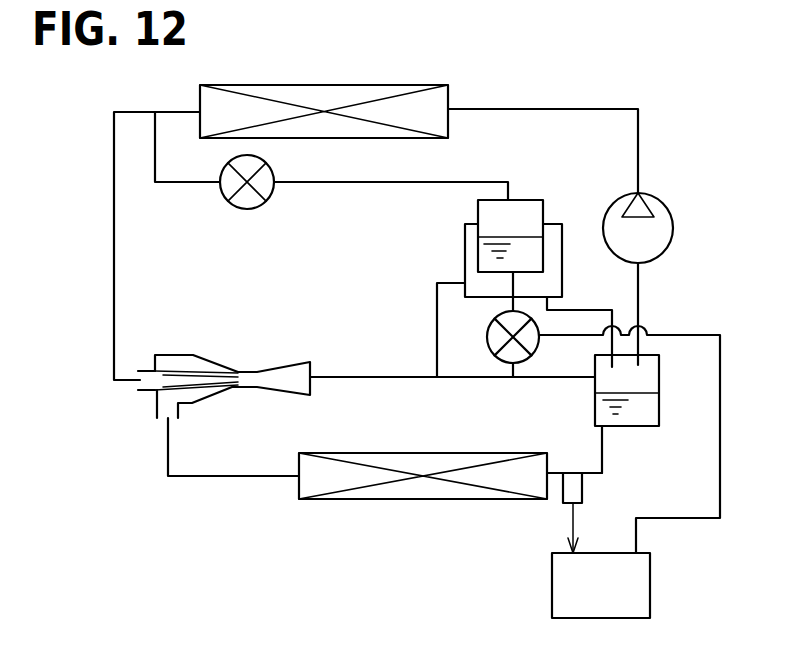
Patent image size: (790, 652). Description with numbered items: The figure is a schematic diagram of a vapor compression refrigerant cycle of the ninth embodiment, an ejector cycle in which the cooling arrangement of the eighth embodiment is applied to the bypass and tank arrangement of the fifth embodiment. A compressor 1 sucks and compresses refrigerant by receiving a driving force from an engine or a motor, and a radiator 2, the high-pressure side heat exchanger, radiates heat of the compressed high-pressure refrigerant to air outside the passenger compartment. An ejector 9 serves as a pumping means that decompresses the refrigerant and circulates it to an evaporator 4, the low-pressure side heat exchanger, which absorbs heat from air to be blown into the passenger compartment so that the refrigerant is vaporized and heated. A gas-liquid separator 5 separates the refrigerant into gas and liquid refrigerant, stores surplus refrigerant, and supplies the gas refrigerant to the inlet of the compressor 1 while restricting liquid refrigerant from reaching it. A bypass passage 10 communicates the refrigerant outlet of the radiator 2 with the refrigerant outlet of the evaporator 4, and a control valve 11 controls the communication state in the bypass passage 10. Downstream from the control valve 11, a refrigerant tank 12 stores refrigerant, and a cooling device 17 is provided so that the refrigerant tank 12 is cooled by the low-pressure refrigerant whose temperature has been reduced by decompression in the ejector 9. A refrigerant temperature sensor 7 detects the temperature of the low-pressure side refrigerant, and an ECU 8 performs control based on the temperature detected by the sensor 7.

The compressor 1 is at (673, 228).
The radiator 2 is at (388, 85).
The evaporator 4 is at (483, 453).
The gas-liquid separator 5 is at (659, 392).
The refrigerant temperature sensor 7 is at (585, 490).
The ECU 8 is at (552, 586).
The ejector 9 is at (257, 370).
The bypass passage 10 is at (179, 184).
The control valve 11 is at (245, 209).
The refrigerant tank 12 is at (533, 198).
The cooling device 17 is at (465, 256).